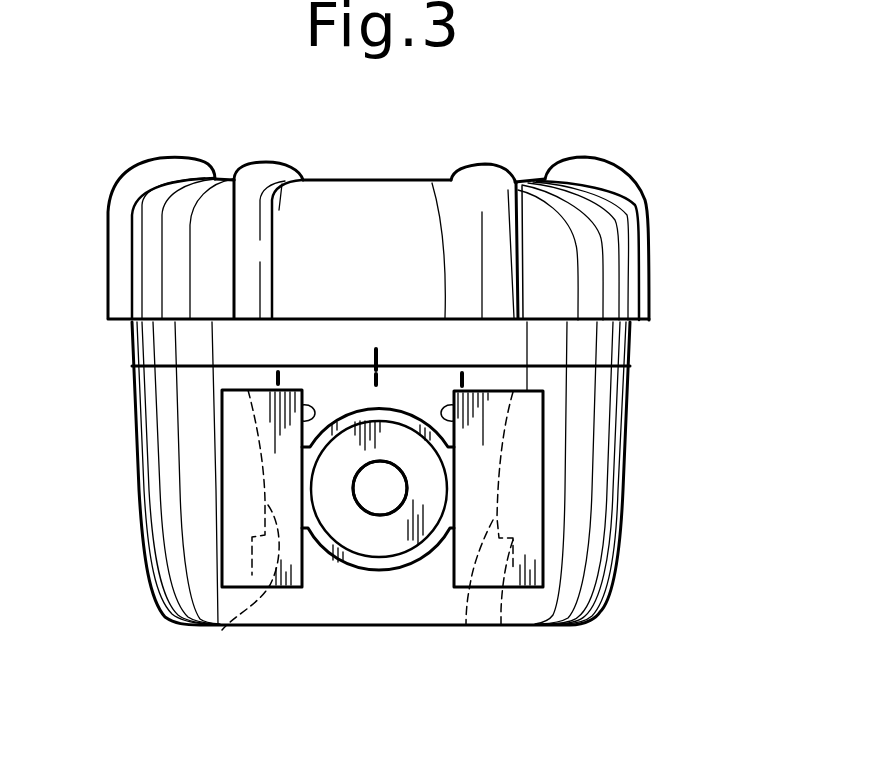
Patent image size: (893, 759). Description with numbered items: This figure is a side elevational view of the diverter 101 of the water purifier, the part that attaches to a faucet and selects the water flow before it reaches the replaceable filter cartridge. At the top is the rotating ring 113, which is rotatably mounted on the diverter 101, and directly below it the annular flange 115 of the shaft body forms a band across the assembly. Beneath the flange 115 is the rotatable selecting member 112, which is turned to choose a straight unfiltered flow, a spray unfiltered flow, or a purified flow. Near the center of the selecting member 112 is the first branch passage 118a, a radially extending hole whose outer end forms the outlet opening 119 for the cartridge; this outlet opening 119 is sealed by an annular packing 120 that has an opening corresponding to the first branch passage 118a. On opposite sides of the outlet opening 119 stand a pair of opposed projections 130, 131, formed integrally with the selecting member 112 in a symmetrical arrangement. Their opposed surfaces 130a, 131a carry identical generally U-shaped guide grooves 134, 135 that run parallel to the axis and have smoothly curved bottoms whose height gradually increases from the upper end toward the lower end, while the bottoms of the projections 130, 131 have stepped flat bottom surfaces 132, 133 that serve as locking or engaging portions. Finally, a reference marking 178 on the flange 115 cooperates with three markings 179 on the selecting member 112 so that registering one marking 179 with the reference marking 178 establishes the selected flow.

The diverter 101 is at (678, 184).
The rotating ring 113 is at (406, 174).
The rotatable selecting member 112 is at (125, 474).
The annular flange 115 is at (618, 342).
The reference marking 178 is at (374, 357).
The markings 179 is at (278, 378).
The projection 131 is at (235, 514).
The projection 130 is at (540, 521).
The opposed surface 131a is at (302, 417).
The opposed surface 130a is at (454, 417).
The annular packing 120 is at (397, 547).
The first branch passage 118a is at (370, 503).
The outlet opening 119 is at (354, 588).
The stepped bottom surface 133 is at (222, 630).
The guide groove 135 is at (262, 582).
The guide groove 134 is at (466, 625).
The stepped bottom surface 132 is at (501, 625).